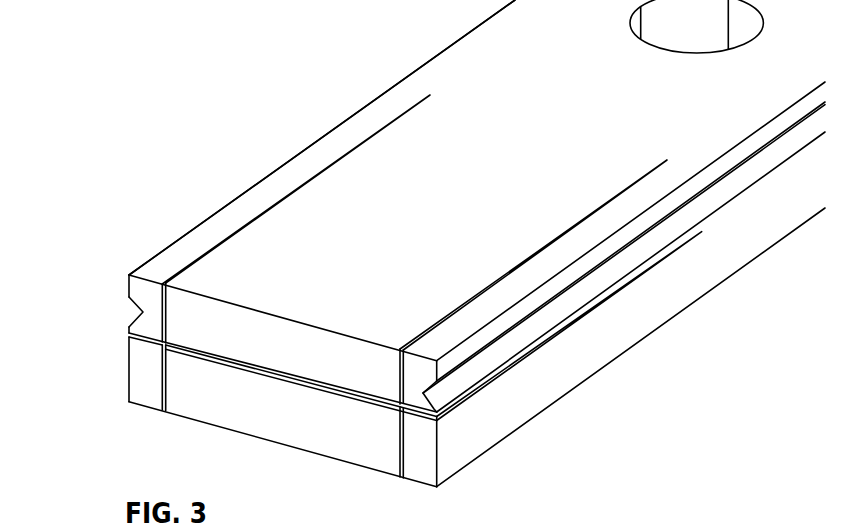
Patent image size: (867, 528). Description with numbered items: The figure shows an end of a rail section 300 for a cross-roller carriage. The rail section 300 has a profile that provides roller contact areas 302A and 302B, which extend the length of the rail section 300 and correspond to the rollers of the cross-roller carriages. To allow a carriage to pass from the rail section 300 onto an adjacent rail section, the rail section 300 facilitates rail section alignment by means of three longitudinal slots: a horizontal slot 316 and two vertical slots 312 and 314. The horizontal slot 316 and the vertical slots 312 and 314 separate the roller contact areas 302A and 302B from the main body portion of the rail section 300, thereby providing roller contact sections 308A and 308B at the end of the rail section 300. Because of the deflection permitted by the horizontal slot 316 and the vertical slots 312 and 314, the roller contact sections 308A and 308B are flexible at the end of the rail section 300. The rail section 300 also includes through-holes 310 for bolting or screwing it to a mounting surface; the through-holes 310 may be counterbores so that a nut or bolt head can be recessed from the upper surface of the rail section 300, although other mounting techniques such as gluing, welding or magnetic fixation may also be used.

The rail section 300 is at (507, 162).
The roller contact area 302A is at (118, 308).
The roller contact area 302B is at (449, 397).
The roller contact section 308A is at (278, 177).
The roller contact section 308B is at (565, 258).
The through-hole 310 is at (705, 34).
The vertical slot 312 is at (432, 95).
The vertical slot 314 is at (635, 182).
The horizontal slot 316 is at (297, 380).